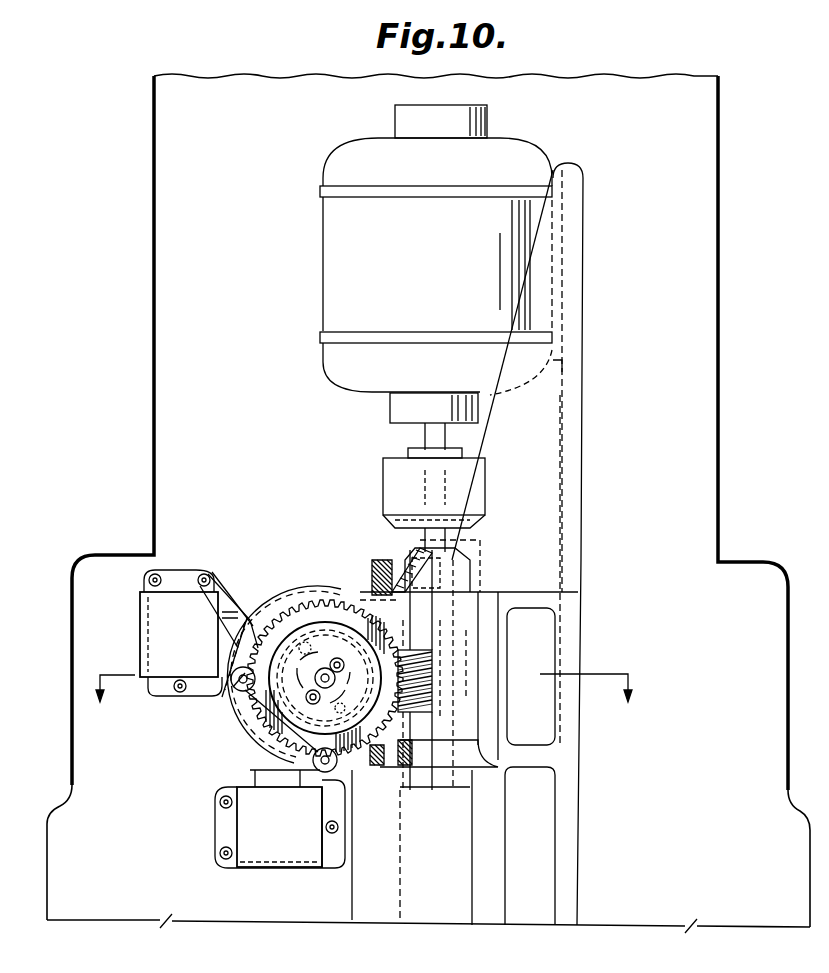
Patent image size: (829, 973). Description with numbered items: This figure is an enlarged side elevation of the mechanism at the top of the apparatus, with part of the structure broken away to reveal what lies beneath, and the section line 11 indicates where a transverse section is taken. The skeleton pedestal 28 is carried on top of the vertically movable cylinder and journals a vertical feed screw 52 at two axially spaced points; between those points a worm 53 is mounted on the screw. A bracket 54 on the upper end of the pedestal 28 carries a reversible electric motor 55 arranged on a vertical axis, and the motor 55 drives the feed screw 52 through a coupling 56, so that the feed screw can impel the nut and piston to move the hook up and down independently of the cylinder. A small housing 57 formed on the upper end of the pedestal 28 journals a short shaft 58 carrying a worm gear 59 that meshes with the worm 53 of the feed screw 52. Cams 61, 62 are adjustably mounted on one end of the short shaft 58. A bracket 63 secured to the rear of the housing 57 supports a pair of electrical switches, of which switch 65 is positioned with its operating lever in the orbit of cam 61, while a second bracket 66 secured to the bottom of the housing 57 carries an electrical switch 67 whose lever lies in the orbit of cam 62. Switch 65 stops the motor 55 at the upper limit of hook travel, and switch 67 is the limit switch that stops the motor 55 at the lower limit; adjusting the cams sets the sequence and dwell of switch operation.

The section line 11- 11 is at (363, 702).
The skeleton pedestal 28 is at (574, 897).
The feed screw 52 is at (400, 900).
The worm 53 is at (425, 672).
The bracket 54 is at (580, 432).
The reversible electric motor 55 is at (345, 273).
The coupling 56 is at (383, 470).
The small housing 57 is at (296, 596).
The short shaft 58 is at (326, 660).
The worm gear 59 is at (372, 752).
The cam 61 is at (268, 713).
The cam 62 is at (272, 617).
The bracket 63 is at (243, 603).
The electrical switch 65 is at (160, 633).
The second bracket 66 is at (245, 778).
The electrical switch 67 is at (262, 857).